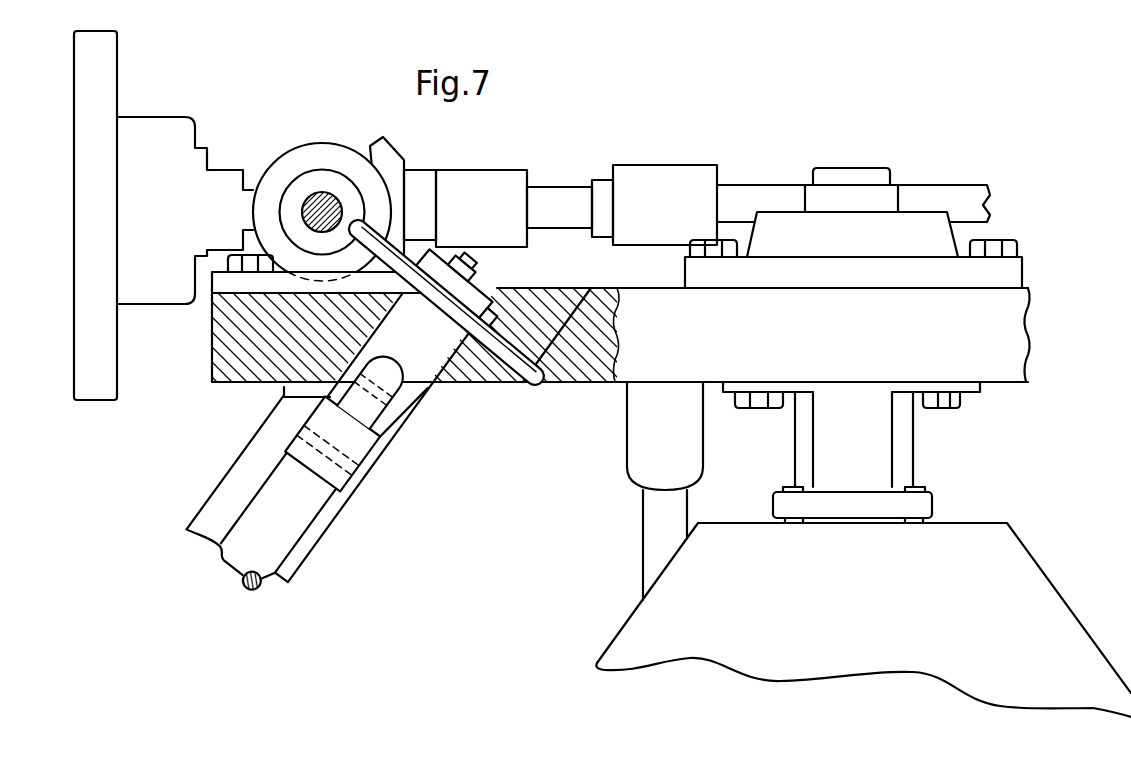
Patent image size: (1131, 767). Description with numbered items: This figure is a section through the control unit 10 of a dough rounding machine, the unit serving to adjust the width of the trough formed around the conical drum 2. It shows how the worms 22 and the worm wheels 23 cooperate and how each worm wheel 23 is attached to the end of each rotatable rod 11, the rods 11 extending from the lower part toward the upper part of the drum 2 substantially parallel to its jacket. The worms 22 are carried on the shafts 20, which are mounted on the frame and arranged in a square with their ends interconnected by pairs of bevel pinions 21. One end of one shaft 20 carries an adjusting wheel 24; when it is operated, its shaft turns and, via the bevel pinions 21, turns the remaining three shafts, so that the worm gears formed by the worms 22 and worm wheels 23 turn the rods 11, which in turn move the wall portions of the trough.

The conical drum 2 is at (652, 627).
The control unit 10 is at (552, 168).
The rotatable rod 11 is at (280, 503).
The shaft 20 is at (328, 195).
The bevel pinion 21 is at (317, 158).
The worm 22 is at (293, 195).
The worm wheel 23 is at (438, 292).
The adjusting wheel 24 is at (105, 83).